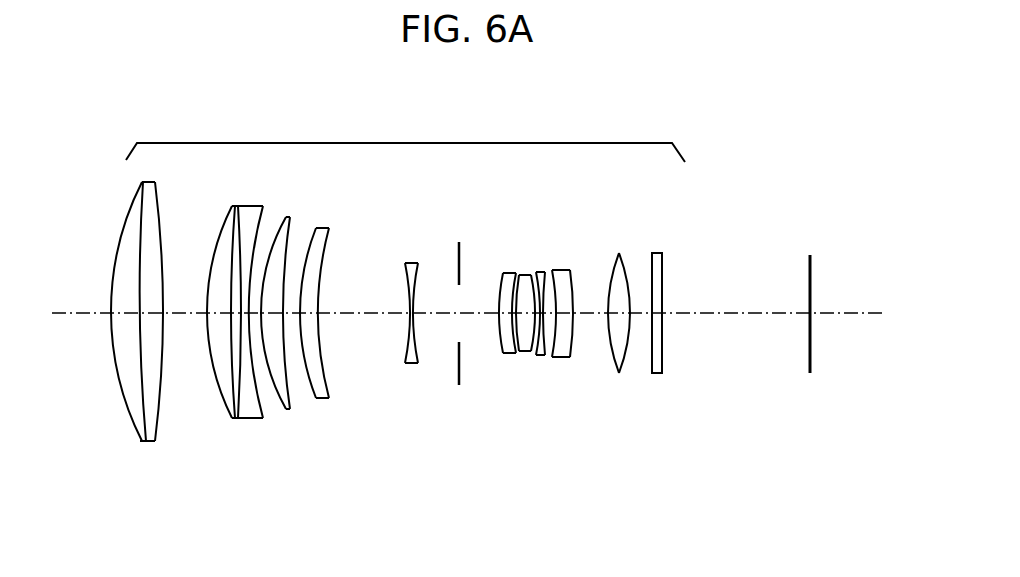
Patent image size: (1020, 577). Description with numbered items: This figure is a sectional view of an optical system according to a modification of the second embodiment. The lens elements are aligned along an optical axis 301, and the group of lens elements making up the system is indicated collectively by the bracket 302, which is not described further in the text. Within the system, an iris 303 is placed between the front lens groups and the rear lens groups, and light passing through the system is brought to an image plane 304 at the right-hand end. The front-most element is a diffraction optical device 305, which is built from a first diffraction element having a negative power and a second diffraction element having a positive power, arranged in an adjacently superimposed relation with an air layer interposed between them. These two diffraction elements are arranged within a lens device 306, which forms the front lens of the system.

The optical axis 301 is at (80, 310).
The lens system 302 is at (385, 143).
The iris 303 is at (458, 260).
The image plane 304 is at (808, 288).
The diffraction optical device 305 is at (142, 262).
The lens device 306 is at (160, 417).